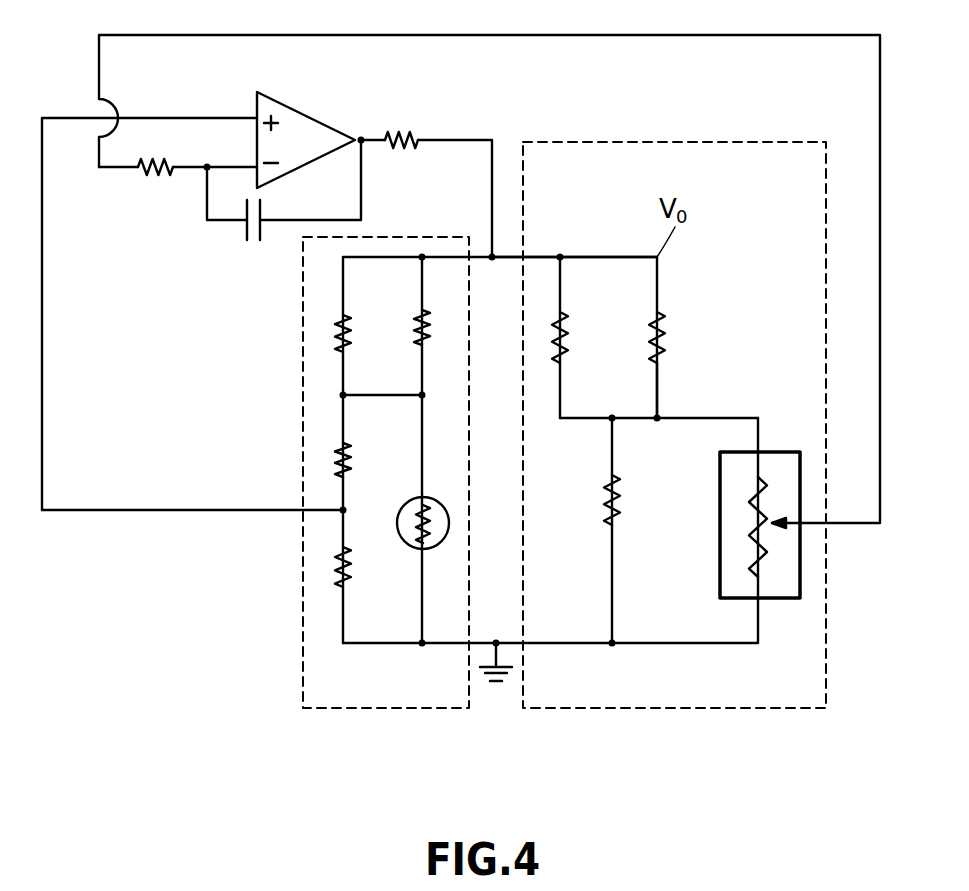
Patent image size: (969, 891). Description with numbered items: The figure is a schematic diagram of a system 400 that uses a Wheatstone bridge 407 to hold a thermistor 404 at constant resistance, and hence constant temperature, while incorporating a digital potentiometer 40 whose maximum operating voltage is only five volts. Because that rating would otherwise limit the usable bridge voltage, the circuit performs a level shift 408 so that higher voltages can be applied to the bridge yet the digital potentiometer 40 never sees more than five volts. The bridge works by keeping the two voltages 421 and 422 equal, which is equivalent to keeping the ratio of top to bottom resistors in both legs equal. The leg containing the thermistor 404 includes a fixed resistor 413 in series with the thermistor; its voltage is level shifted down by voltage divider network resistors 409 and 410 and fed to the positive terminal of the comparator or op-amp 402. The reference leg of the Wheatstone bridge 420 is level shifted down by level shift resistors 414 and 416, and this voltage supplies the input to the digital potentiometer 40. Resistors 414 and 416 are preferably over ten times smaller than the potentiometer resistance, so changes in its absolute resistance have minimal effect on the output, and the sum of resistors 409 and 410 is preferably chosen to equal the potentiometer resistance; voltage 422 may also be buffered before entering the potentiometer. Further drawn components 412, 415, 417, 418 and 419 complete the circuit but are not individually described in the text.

The temperature control circuit 400 is at (267, 782).
The comparator or op-amp 402 is at (310, 117).
The thermistor 404 is at (437, 540).
The Wheatstone bridge 407 is at (607, 257).
The level shift 408 is at (133, 510).
The voltage divider network resistor 409 is at (343, 450).
The voltage divider network resistor 410 is at (343, 570).
The resistor 412 is at (343, 323).
The fixed resistor 413 is at (422, 323).
The level shift resistor 414 is at (560, 350).
The resistor 415 is at (657, 323).
The level shift resistor 416 is at (612, 513).
The capacitor 417 is at (243, 237).
The resistor 418 is at (140, 173).
The bridge circuit / resistor 419 is at (412, 133).
The reference leg of the Wheatstone bridge 420 is at (697, 708).
The voltage 421 is at (422, 377).
The voltage 422 is at (657, 390).
The digital potentiometer 40 is at (800, 560).